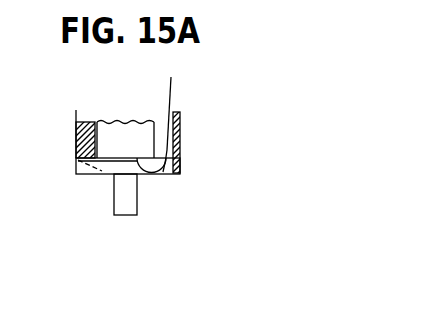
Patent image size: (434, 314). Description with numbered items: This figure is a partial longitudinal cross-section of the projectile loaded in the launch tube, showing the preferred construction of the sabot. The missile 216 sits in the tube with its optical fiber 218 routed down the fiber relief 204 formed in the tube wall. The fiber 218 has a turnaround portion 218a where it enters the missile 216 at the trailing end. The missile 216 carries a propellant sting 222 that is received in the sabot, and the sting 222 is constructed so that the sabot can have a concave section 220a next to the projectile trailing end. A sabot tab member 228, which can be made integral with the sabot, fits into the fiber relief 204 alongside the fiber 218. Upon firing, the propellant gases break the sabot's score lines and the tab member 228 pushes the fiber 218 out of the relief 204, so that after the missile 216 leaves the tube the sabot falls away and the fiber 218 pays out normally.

The fiber relief 204 is at (180, 139).
The missile 216 is at (137, 133).
The optical fiber 218 is at (172, 100).
The turnaround portion 218a is at (166, 170).
The sabot tab member 228 is at (181, 166).
The propellant sting 222 is at (138, 200).
The concave section 220a is at (102, 171).